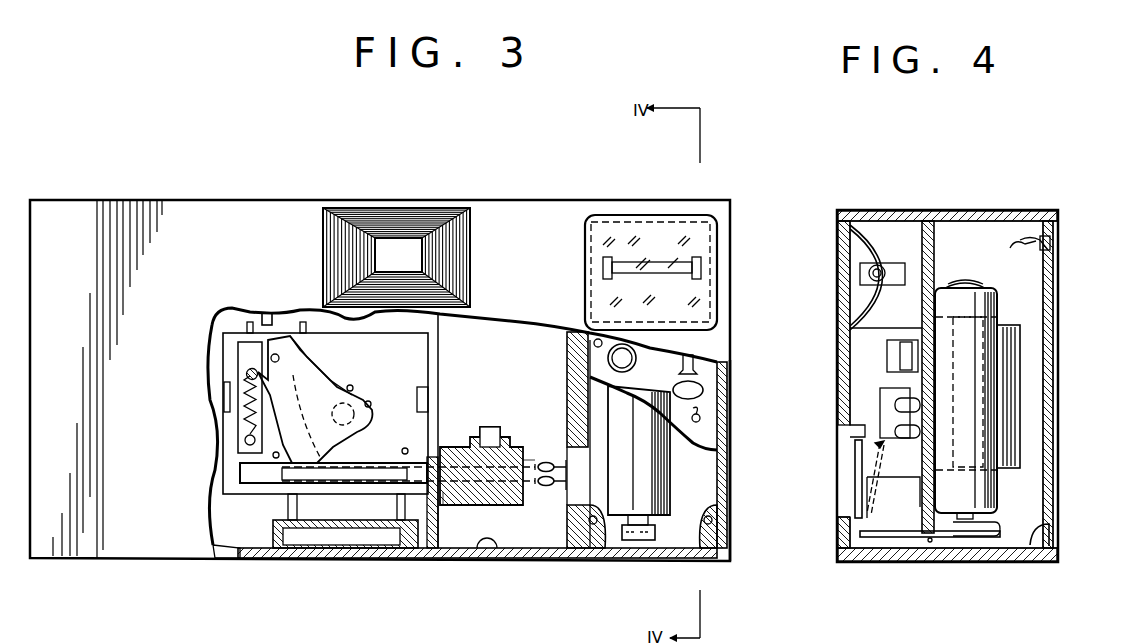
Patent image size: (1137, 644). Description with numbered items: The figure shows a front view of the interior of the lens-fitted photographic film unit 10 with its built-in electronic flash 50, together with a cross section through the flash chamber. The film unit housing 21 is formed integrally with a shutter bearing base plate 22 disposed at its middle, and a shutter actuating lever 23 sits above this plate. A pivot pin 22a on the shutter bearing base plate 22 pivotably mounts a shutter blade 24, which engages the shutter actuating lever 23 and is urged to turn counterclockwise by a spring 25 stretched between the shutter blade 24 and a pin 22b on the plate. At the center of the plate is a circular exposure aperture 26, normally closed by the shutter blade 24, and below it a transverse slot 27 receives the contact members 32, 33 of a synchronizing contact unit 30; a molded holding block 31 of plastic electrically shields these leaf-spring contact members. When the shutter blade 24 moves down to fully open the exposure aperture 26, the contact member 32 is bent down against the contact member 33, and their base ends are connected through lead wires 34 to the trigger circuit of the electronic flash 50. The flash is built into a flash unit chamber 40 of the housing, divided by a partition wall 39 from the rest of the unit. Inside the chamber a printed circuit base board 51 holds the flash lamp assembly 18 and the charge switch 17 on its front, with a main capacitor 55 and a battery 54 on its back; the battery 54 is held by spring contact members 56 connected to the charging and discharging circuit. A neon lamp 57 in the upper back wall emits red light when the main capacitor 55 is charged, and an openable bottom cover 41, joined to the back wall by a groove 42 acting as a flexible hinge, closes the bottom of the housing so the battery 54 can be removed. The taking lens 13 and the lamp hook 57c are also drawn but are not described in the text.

In FIG. 3, the lens-fitted photographic film unit 10 is at (294, 191).
In FIG. 3, the taking lens 13 is at (401, 207).
In FIG. 3, the flash lamp assembly 18 is at (643, 229).
In FIG. 4, the flash lamp assembly 18 is at (869, 255).
In FIG. 3, the film unit housing 21 is at (735, 495).
In FIG. 3, the shutter bearing base plate 22 is at (415, 360).
In FIG. 3, the pivot pin 22a is at (271, 358).
In FIG. 3, the pin 22b is at (245, 443).
In FIG. 3, the shutter actuating lever 23 is at (268, 313).
In FIG. 3, the shutter blade 24 is at (322, 393).
In FIG. 3, the spring 25 is at (248, 398).
In FIG. 3, the exposure aperture 26 is at (355, 418).
In FIG. 3, the transverse slot 27 is at (243, 470).
In FIG. 3, the synchronizing contact unit 30 is at (470, 507).
In FIG. 3, the molded holding block 31 is at (458, 445).
In FIG. 3, the contact member 32 is at (370, 484).
In FIG. 3, the contact member 33 is at (270, 490).
In FIG. 3, the lead wires 34 is at (553, 463).
In FIG. 3, the partition wall 39 is at (568, 355).
In FIG. 3, the flash unit chamber 40 is at (727, 458).
In FIG. 3, the bottom cover 41 is at (500, 556).
In FIG. 4, the bottom cover 41 is at (968, 558).
In FIG. 4, the groove 42 is at (1040, 540).
In FIG. 3, the electronic flash 50 is at (735, 373).
In FIG. 4, the electronic flash 50 is at (957, 209).
In FIG. 3, the printed circuit base board 51 is at (710, 402).
In FIG. 4, the printed circuit base board 51 is at (925, 240).
In FIG. 3, the battery 54 is at (650, 485).
In FIG. 4, the battery 54 is at (1000, 305).
In FIG. 4, the main capacitor 55 is at (1015, 400).
In FIG. 4, the spring contact members 56 is at (975, 283).
In FIG. 4, the neon lamp 57 is at (1052, 215).
In FIG. 4, the cover hook 57c is at (1055, 247).
In FIG. 4, the charge switch 17 is at (860, 478).